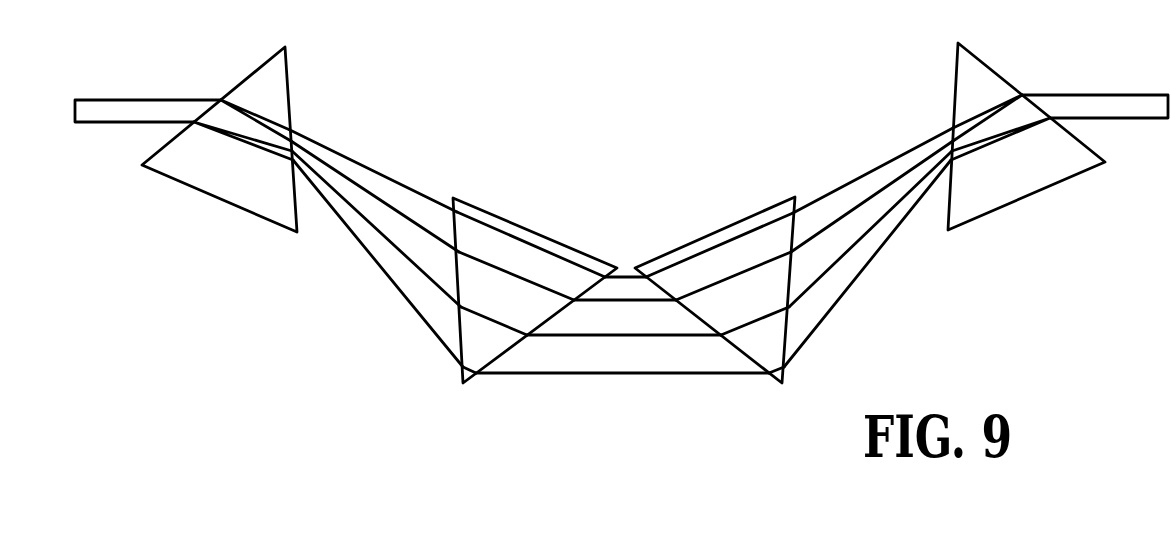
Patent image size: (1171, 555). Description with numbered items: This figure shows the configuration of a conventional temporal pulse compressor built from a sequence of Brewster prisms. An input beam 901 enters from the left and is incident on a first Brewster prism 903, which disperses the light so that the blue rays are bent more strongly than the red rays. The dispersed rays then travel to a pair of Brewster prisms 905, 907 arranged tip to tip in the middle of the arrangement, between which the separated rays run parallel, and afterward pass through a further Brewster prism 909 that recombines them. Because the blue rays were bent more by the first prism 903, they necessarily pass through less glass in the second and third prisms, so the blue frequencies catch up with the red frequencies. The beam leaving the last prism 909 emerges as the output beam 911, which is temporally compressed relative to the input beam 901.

The input beam 901 is at (155, 99).
The first Brewster prism 903 is at (291, 107).
The Brewster prism 905 is at (512, 222).
The Brewster prism 907 is at (730, 222).
The Brewster prism 909 is at (953, 90).
The output beam 911 is at (1093, 95).